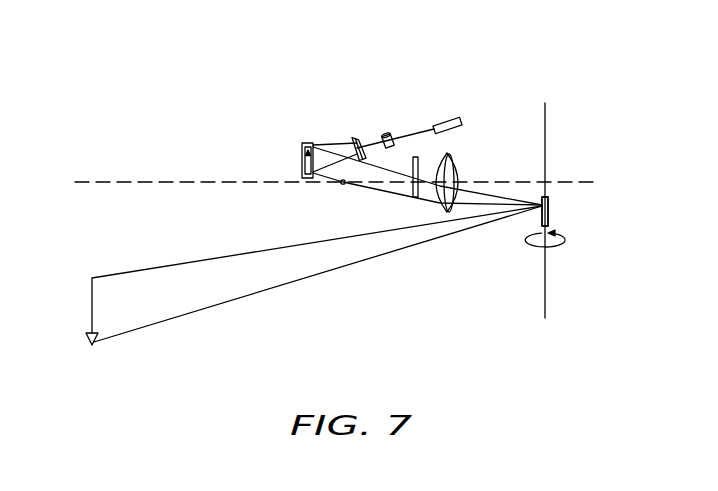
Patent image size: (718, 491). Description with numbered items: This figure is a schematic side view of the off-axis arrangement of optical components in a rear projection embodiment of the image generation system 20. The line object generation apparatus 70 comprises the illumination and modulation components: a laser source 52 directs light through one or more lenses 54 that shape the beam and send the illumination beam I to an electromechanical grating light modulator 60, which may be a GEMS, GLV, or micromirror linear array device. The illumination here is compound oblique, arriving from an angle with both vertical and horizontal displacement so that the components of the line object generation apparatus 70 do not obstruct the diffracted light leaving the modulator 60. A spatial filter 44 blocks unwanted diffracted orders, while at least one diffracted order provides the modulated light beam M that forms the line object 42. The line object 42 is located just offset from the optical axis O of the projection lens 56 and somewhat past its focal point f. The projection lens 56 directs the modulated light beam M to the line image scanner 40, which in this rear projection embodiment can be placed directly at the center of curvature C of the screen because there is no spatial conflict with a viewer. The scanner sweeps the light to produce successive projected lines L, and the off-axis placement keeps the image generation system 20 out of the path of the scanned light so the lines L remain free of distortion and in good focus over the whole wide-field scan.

The image generation system 20 is at (164, 141).
The line image scanner 40 is at (550, 222).
The line object 42 is at (302, 142).
The spatial filter 44 is at (413, 190).
The laser source 52 is at (462, 122).
The lenses 54 is at (359, 139).
The projection lens 56 is at (455, 168).
The electromechanical grating light modulator 60 is at (302, 162).
The line object generation apparatus 70 is at (596, 197).
The optical axis O is at (322, 180).
The illumination beam I is at (330, 143).
The focal point f is at (342, 183).
The modulated light beam M is at (512, 196).
The scanned lines L is at (94, 346).
The center of curvature C is at (544, 226).